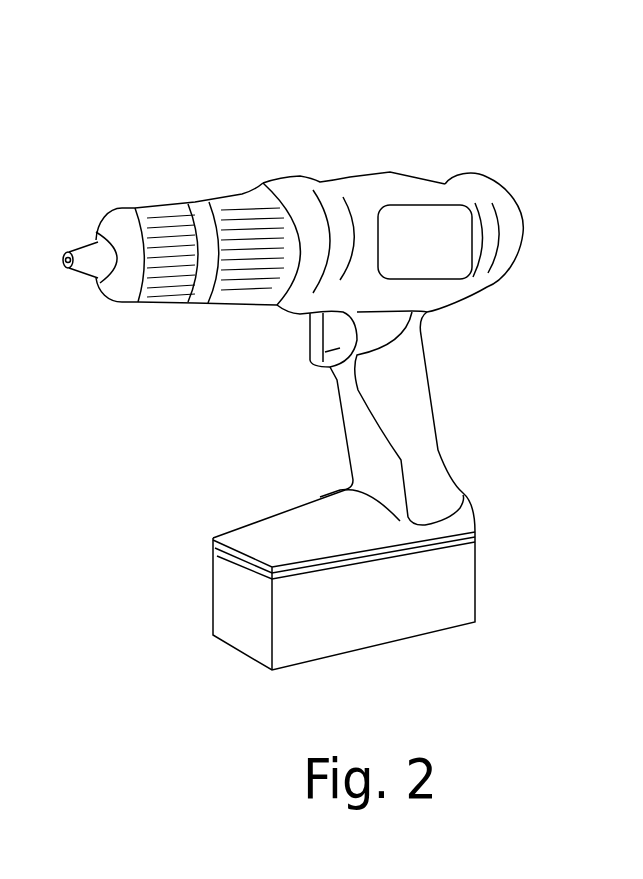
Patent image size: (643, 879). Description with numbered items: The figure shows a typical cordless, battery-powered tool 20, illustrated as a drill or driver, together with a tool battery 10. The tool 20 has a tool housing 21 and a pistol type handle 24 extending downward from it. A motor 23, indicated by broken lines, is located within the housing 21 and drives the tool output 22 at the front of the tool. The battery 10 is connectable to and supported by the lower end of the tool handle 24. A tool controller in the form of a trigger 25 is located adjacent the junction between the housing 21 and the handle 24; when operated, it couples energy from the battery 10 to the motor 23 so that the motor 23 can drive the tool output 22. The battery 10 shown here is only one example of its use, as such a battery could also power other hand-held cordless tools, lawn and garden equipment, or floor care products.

The tool battery 10 is at (438, 603).
The cordless tool 20 is at (518, 133).
The tool housing 21 is at (390, 187).
The tool output 22 is at (165, 273).
The motor 23 is at (432, 254).
The pistol type handle 24 is at (407, 418).
The trigger 25 is at (325, 351).